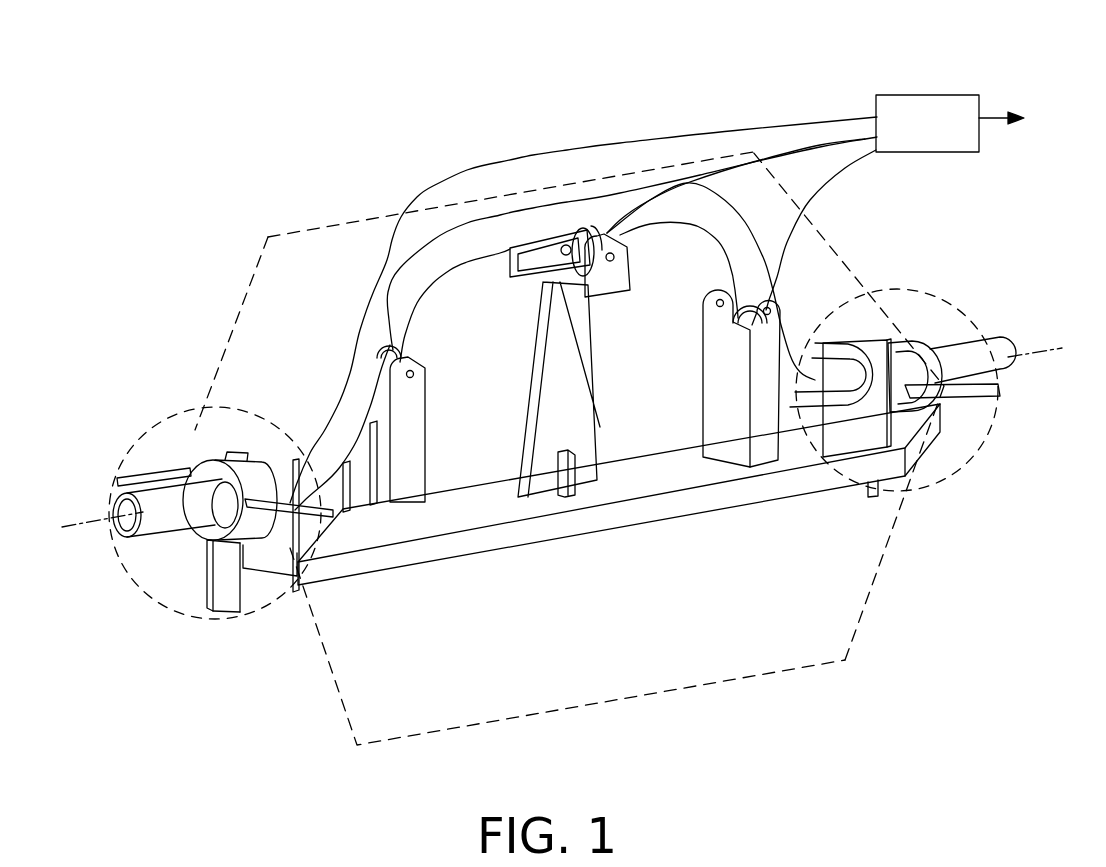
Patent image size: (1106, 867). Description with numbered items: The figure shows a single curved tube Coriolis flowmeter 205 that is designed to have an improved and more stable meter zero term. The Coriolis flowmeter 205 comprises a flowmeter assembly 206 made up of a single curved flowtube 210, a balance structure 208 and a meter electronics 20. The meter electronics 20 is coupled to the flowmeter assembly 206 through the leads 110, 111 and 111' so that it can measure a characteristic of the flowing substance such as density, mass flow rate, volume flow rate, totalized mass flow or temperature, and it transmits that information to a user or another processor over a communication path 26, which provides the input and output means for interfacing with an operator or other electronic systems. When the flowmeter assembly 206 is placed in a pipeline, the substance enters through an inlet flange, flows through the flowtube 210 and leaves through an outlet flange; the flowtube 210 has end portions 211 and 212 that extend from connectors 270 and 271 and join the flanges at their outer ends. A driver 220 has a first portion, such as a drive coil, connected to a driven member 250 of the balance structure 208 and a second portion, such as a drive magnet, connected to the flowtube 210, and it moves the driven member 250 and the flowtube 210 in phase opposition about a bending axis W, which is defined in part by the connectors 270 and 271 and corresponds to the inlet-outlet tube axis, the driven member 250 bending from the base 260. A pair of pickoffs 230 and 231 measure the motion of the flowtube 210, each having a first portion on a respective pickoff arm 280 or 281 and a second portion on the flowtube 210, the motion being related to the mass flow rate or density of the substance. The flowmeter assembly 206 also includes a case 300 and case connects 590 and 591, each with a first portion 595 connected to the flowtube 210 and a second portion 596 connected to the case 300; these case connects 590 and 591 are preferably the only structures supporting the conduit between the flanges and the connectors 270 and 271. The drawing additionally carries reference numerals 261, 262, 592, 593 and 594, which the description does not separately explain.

The meter electronics 20 is at (913, 150).
The communication path 26 is at (987, 112).
The lead 110 is at (774, 150).
The lead 111 is at (583, 281).
The lead 111' is at (851, 230).
The Coriolis flowmeter 205 is at (880, 687).
The flowmeter assembly 206 is at (290, 278).
The balance structure 208 is at (573, 583).
The single curved flowtube 210 is at (490, 232).
The end portion 211 is at (165, 535).
The end portion 212 is at (947, 343).
The driver 220 is at (548, 283).
The pickoff 230 is at (397, 358).
The pickoff 231 is at (717, 290).
The driven member 250 is at (600, 427).
The base 260 is at (482, 515).
The base plate front edge 261 is at (320, 575).
The cable guide 262 is at (826, 345).
The connector 270 is at (288, 470).
The connector 271 is at (872, 432).
The pickoff arm 280 is at (410, 443).
The pickoff arm 281 is at (720, 410).
The case 300 is at (247, 287).
The case connect 590 is at (197, 540).
The case connect 591 is at (923, 413).
The clamp mount 592 is at (293, 580).
The clamp plate bottom 593 is at (225, 609).
The clamp arm 594 is at (150, 475).
The first portion 595 is at (223, 430).
The second portion 596 is at (247, 613).
The bending axis W is at (564, 436).